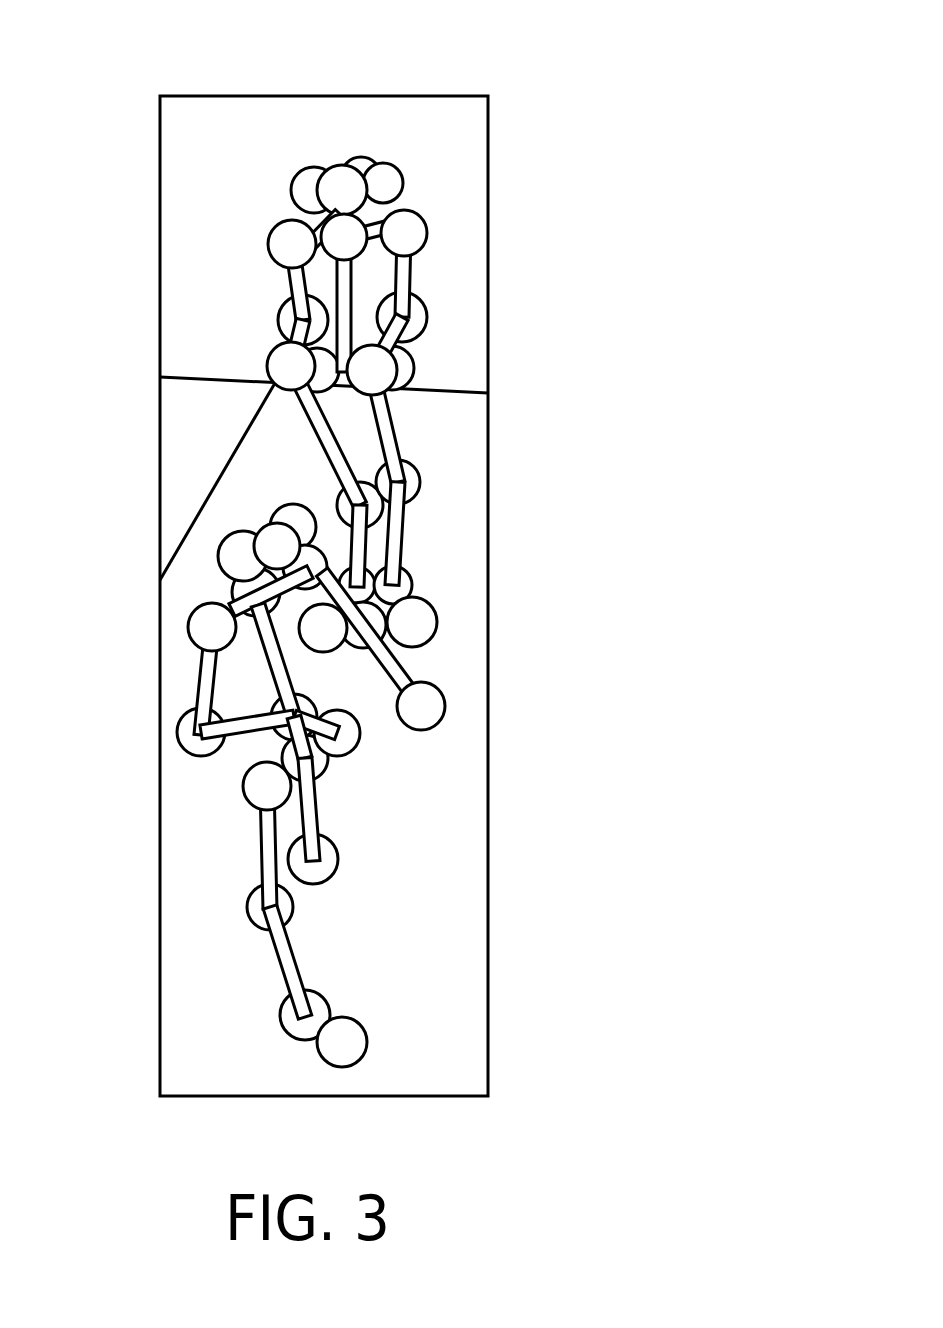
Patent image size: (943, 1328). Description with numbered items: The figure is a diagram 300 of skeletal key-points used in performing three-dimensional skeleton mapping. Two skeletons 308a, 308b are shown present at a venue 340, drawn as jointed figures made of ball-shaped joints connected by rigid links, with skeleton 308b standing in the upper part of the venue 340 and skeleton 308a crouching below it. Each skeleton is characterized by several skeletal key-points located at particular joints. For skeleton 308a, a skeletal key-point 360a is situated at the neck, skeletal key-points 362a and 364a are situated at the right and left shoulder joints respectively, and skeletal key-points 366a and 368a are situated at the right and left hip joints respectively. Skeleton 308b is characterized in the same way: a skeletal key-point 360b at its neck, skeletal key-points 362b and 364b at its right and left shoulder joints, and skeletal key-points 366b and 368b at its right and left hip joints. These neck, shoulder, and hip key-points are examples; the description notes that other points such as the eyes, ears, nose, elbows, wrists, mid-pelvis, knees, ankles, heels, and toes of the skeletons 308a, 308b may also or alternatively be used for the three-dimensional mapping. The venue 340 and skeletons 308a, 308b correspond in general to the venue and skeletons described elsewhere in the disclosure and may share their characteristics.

The diagram 300 is at (533, 73).
The venue 340 is at (436, 962).
The skeleton 308a is at (150, 423).
The skeleton 308b is at (150, 147).
The skeletal key-point 360a is at (233, 598).
The skeletal key-point 360b is at (348, 240).
The skeletal key-point 362a is at (200, 628).
The skeletal key-point 362b is at (268, 237).
The skeletal key-point 364a is at (320, 572).
The skeletal key-point 364b is at (428, 230).
The skeletal key-point 366a is at (243, 790).
The skeletal key-point 366b is at (277, 385).
The skeletal key-point 368a is at (350, 737).
The skeletal key-point 368b is at (380, 365).